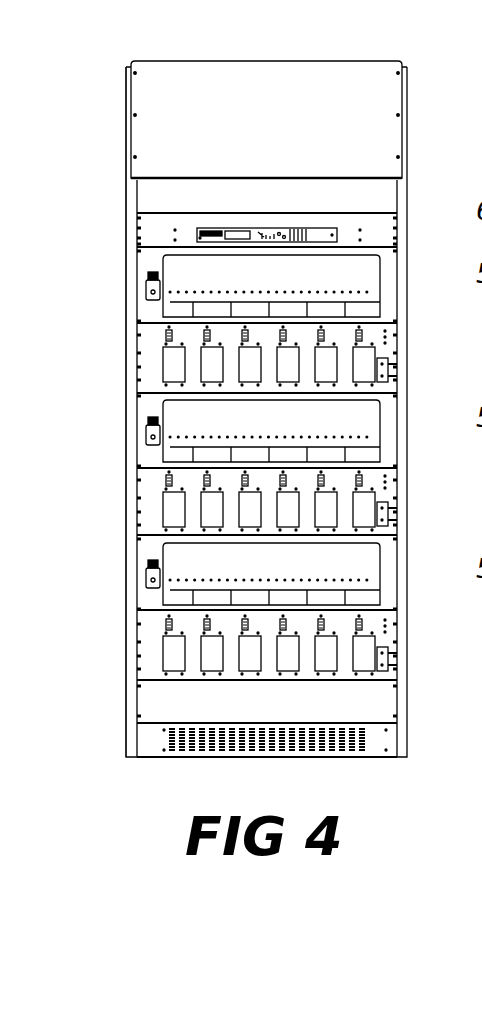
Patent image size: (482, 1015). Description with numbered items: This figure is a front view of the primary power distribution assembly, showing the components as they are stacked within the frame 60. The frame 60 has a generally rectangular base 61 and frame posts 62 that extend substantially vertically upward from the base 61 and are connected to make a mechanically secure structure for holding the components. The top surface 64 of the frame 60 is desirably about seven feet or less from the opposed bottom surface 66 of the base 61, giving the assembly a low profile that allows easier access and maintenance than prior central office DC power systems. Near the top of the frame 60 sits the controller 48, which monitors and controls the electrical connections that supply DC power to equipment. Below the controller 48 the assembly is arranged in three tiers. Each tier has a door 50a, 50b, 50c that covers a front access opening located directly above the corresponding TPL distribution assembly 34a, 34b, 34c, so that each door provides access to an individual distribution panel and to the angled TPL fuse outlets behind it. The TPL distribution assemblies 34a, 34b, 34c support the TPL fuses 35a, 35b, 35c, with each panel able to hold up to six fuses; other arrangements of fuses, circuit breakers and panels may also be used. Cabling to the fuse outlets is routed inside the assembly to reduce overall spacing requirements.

The TPL distribution assembly 34a is at (157, 355).
The TPL distribution assembly 34b is at (157, 497).
The TPL distribution assembly 34c is at (157, 657).
The TPL fuse 35a is at (368, 367).
The TPL fuse 35b is at (368, 516).
The TPL fuse 35c is at (368, 660).
The controller 48 is at (170, 238).
The door 50a is at (155, 310).
The door 50b is at (155, 452).
The door 50c is at (157, 595).
The frame 60 is at (407, 292).
The base 61 is at (383, 742).
The frame post 62 is at (127, 408).
The top surface 64 is at (172, 62).
The bottom surface 66 is at (167, 757).